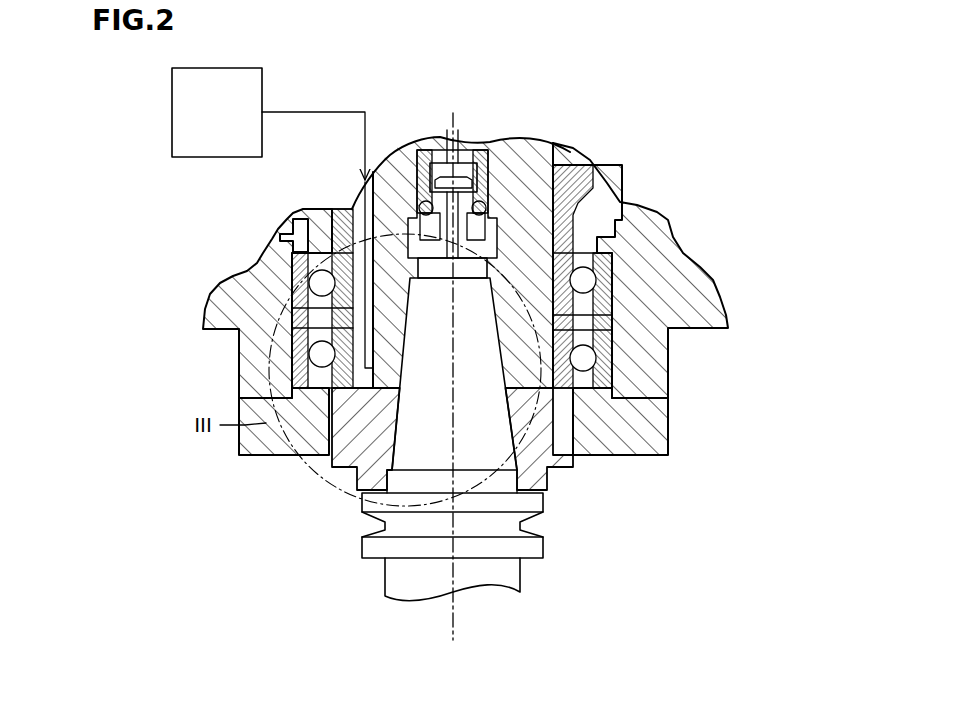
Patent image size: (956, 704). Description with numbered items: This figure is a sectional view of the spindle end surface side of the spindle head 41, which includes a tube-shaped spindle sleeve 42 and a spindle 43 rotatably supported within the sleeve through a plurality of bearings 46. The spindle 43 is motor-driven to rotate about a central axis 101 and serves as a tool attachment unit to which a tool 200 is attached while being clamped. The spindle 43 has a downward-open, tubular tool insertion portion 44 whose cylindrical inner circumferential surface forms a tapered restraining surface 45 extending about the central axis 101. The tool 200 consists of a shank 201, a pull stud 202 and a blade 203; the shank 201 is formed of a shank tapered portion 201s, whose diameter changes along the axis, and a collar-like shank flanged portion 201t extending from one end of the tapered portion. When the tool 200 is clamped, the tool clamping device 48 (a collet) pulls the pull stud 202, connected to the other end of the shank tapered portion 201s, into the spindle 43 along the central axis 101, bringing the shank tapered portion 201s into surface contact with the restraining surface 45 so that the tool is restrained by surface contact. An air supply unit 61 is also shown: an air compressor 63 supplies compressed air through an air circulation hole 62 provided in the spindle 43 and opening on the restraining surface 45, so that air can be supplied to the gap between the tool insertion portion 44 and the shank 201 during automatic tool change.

The spindle head 41 is at (224, 452).
The spindle sleeve 42 is at (687, 303).
The spindle 43 is at (522, 152).
The tool insertion portion 44 is at (330, 472).
The restraining surface 45 is at (437, 330).
The bearing 46 is at (602, 278).
The tool clamping device 48 is at (433, 155).
The air supply unit 61 is at (190, 174).
The air circulation hole 62 is at (290, 380).
The air compressor 63 is at (219, 76).
The central axis 101 is at (477, 473).
The tool 200 is at (485, 531).
The shank 201 is at (532, 512).
The shank tapered portion 201s is at (560, 462).
The shank flanged portion 201t is at (502, 548).
The pull stud 202 is at (467, 190).
The blade 203 is at (518, 578).